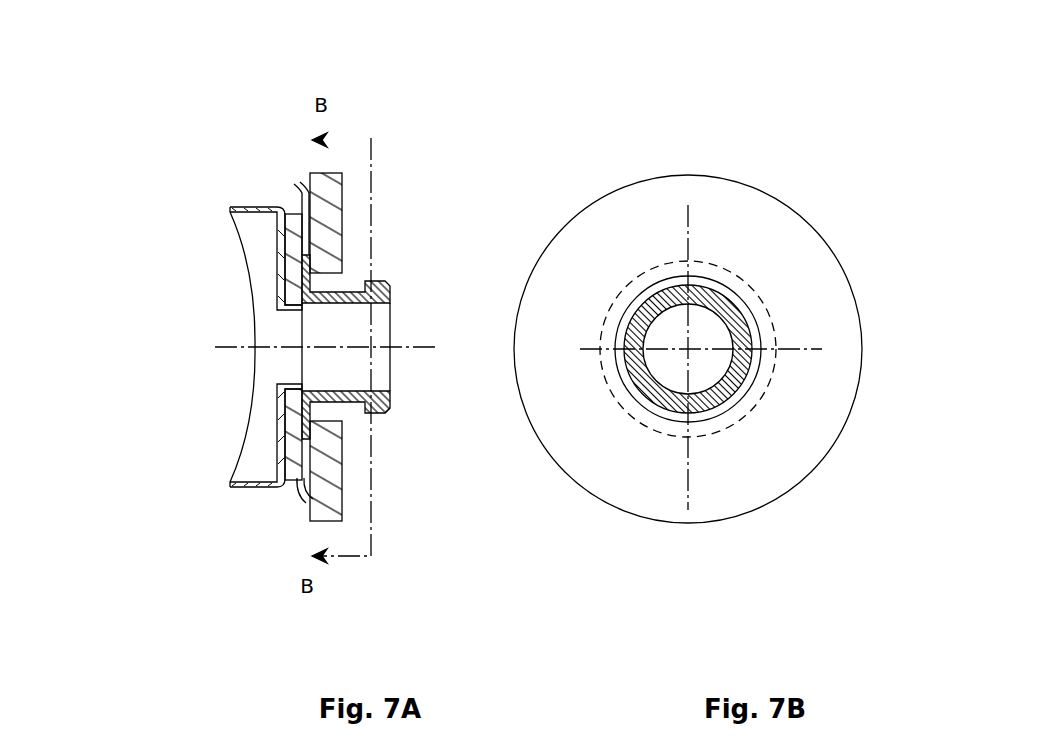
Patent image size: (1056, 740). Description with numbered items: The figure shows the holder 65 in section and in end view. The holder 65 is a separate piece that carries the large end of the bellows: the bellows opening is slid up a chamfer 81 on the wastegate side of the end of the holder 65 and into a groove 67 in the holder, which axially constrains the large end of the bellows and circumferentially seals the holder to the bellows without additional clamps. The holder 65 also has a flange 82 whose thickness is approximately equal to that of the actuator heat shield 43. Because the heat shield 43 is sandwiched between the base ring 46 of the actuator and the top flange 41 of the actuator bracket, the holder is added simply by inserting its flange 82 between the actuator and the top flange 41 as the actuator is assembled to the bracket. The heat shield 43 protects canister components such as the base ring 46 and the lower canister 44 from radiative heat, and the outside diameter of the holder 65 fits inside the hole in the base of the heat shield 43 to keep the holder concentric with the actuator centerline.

In FIG. 7A, the top flange 41 is at (325, 210).
In FIG. 7B, the top flange 41 is at (805, 288).
In FIG. 7A, the actuator heat shield 43 is at (301, 191).
In FIG. 7A, the lower canister 44 is at (242, 207).
In FIG. 7A, the base ring 46 is at (298, 243).
In FIG. 7A, the holder 65 is at (386, 283).
In FIG. 7B, the holder 65 is at (748, 368).
In FIG. 7A, the groove 67 is at (346, 281).
In FIG. 7A, the chamfer 81 is at (388, 422).
In FIG. 7A, the flange 82 is at (305, 419).
In FIG. 7B, the flange 82 is at (671, 165).